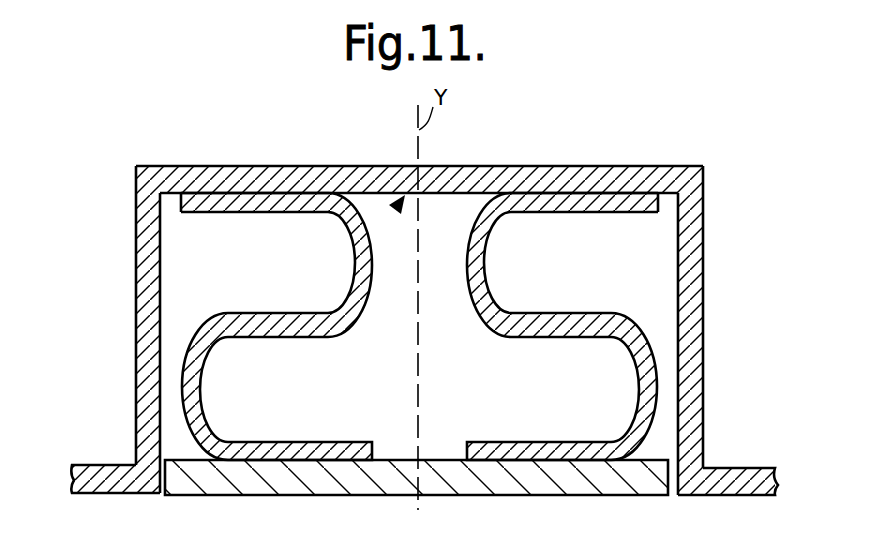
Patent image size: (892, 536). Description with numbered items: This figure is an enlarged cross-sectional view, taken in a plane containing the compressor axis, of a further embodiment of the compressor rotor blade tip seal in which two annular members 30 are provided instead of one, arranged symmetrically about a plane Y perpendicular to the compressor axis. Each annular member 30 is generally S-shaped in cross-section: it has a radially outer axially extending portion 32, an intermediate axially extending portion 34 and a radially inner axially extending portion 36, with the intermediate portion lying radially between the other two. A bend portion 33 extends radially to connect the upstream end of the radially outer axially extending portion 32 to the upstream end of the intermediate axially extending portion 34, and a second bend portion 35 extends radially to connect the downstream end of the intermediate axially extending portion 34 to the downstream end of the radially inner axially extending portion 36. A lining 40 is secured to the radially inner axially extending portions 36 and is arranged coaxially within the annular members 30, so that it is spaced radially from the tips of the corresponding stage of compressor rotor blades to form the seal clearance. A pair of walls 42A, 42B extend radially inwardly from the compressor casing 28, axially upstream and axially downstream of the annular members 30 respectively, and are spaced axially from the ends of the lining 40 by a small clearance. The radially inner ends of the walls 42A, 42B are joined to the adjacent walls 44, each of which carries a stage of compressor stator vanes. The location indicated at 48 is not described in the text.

The compressor casing 28 is at (566, 180).
The annular member 30 is at (419, 293).
The radially outer axially extending portion 32 is at (262, 200).
The bend portion 33 is at (355, 263).
The intermediate axially extending portion 34 is at (277, 325).
The bend portion 35 is at (199, 373).
The radially inner axially extending portion 36 is at (302, 442).
The lining 40 is at (625, 477).
The wall 42A is at (148, 253).
The wall 42B is at (692, 292).
The wall 44 is at (110, 465).
The attachment point of spring to housing 48 is at (397, 209).